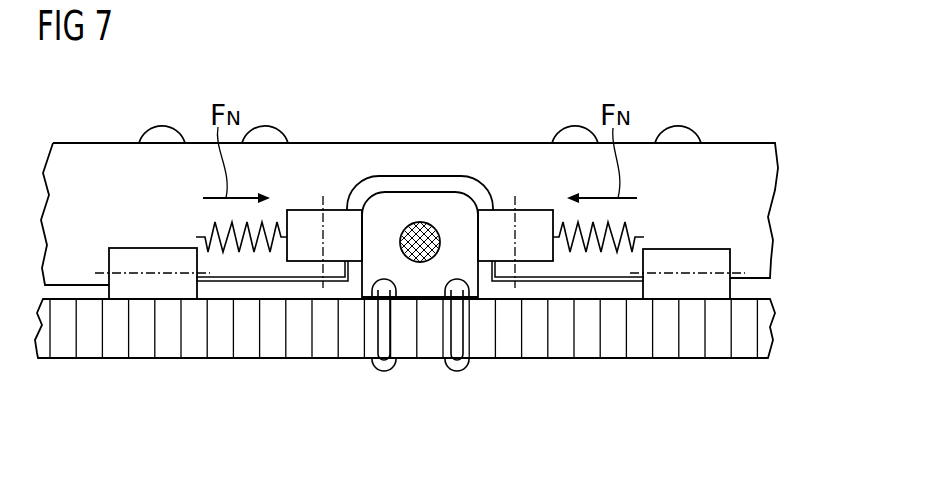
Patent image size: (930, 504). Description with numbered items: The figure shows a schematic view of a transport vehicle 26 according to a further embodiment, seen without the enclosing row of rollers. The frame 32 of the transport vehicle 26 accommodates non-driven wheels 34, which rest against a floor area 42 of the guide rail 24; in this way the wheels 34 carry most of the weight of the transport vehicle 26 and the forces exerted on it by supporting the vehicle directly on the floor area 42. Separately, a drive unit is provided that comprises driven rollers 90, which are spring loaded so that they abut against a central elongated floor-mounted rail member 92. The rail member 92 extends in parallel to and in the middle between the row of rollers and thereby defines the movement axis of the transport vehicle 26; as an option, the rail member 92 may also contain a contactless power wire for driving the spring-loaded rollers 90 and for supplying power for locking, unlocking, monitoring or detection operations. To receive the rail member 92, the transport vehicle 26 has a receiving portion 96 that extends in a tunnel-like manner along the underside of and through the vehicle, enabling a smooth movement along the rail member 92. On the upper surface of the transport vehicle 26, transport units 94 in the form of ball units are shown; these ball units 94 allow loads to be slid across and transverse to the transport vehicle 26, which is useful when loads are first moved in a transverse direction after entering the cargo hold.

The guide rail 24 is at (580, 380).
The transport vehicle 26 is at (740, 155).
The frame 32 is at (753, 280).
The non-driven wheels 34 is at (138, 260).
The floor area 42 is at (637, 358).
The driven rollers 90 is at (313, 223).
The rail member 92 is at (417, 212).
The transport units 94 is at (163, 128).
The receiving portion 96 is at (433, 190).